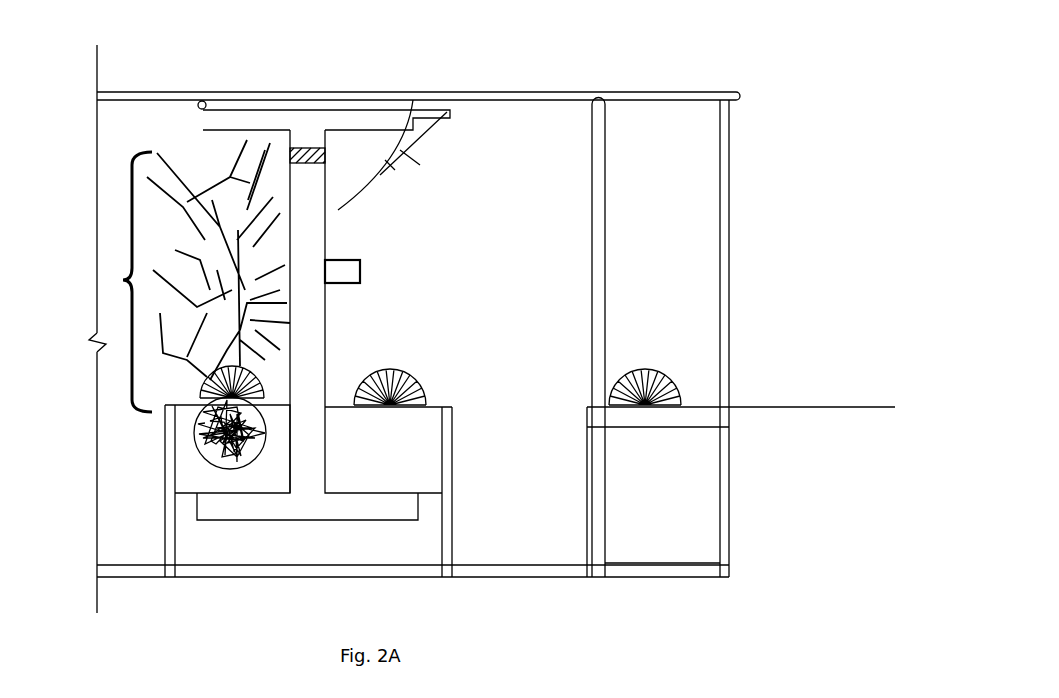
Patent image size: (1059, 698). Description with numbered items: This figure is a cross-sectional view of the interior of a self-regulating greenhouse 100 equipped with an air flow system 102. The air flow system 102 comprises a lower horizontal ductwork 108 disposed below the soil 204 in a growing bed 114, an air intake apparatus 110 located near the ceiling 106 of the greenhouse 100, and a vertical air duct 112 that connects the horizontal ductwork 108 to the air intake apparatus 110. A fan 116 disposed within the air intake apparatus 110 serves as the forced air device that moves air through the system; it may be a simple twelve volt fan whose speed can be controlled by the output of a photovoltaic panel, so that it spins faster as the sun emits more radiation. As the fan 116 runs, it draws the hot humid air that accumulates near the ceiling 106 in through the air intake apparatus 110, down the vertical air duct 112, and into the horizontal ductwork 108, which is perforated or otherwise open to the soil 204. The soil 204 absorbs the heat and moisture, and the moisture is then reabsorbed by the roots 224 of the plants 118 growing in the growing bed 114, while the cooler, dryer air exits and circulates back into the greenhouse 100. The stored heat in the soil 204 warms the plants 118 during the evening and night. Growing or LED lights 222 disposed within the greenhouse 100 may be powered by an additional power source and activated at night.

The greenhouse 100 is at (766, 59).
The ceiling 106 is at (483, 97).
The air intake apparatus 110 is at (395, 115).
The fan 116 is at (313, 155).
The soil 204 is at (371, 353).
The lower horizontal ductwork 108 is at (400, 508).
The growing bed 114 is at (430, 410).
The vertical air duct 112 is at (325, 358).
The LED lights 222 is at (360, 272).
The air flow system 102 is at (343, 308).
The plants 118 is at (123, 280).
The roots 224 is at (187, 412).